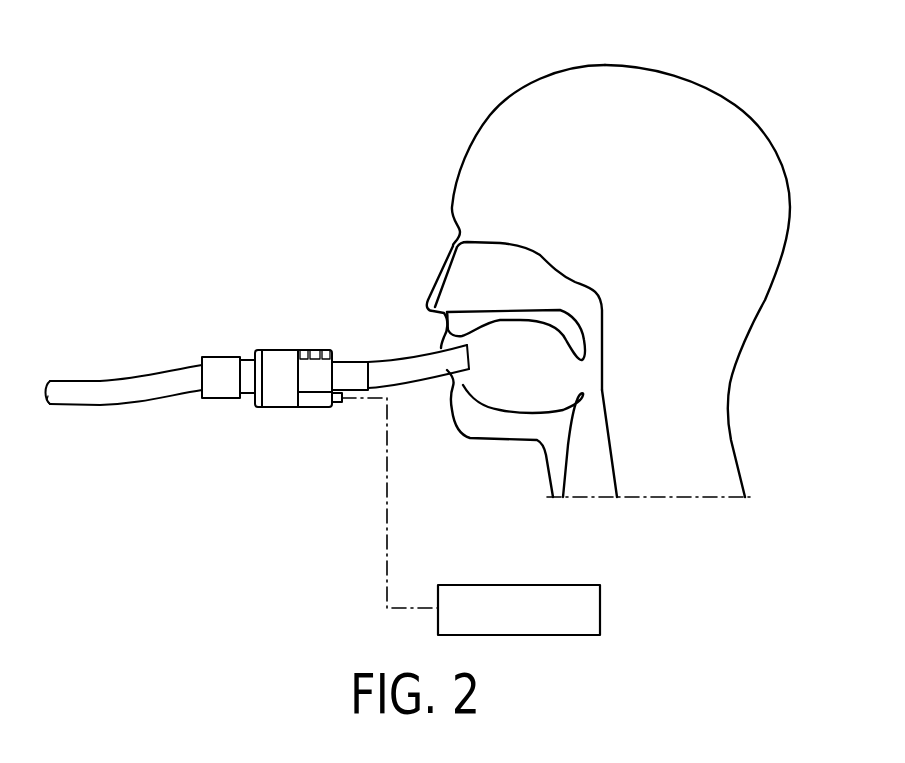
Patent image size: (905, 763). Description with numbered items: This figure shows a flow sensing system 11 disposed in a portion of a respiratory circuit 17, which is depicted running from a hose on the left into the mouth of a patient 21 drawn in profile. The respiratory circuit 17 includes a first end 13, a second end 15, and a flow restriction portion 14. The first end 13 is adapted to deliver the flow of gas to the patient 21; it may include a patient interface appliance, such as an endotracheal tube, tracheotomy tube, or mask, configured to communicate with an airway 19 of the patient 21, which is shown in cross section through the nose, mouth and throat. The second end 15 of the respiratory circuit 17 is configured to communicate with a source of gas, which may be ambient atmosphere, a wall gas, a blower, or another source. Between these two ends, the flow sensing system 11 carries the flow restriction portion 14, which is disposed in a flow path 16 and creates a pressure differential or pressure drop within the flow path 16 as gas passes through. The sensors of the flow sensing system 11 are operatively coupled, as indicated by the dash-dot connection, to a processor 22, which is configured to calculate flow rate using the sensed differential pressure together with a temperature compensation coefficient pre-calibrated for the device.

The flow sensing system 11 is at (298, 340).
The first end 13 is at (404, 365).
The flow restriction portion 14 is at (283, 397).
The second end 15 is at (75, 388).
The flow path 16 is at (188, 362).
The respiratory circuit 17 is at (136, 254).
The airway 19 is at (590, 480).
The patient 21 is at (618, 85).
The processor 22 is at (600, 608).